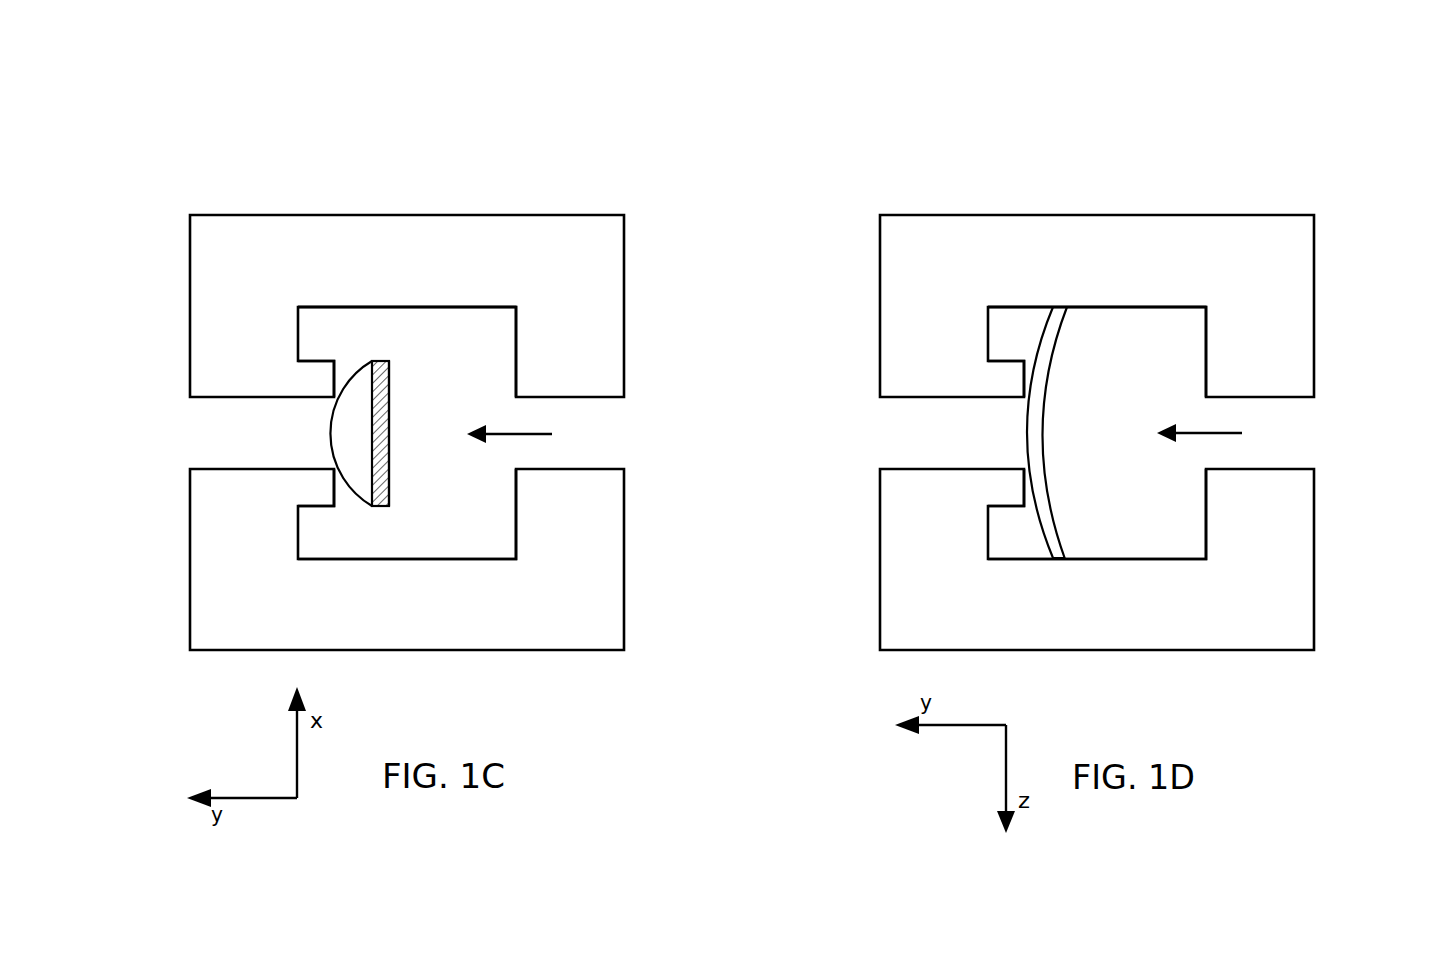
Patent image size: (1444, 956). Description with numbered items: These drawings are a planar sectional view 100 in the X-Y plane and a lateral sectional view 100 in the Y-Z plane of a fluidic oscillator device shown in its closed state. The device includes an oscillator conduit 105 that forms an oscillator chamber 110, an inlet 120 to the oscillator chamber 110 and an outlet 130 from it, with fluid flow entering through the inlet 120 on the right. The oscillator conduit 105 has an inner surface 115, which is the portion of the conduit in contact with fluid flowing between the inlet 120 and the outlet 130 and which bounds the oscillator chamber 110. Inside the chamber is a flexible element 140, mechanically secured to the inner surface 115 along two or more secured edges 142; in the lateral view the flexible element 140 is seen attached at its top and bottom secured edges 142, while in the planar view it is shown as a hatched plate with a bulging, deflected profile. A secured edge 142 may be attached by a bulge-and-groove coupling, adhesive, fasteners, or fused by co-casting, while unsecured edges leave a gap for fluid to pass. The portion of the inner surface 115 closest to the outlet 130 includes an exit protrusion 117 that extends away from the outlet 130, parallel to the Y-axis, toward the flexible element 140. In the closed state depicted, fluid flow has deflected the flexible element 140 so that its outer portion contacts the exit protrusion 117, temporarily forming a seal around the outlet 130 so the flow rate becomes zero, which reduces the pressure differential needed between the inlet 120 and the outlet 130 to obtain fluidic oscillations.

In FIG. 1C, the sectional view 100 is at (173, 64).
In FIG. 1D, the sectional view 100 is at (862, 62).
In FIG. 1C, the oscillator conduit 105 is at (553, 272).
In FIG. 1D, the oscillator conduit 105 is at (1228, 265).
In FIG. 1C, the oscillator chamber 110 is at (461, 342).
In FIG. 1D, the oscillator chamber 110 is at (1151, 342).
In FIG. 1C, the inner surface 115 is at (425, 306).
In FIG. 1D, the inner surface 115 is at (1115, 306).
In FIG. 1C, the exit protrusion 117 is at (318, 490).
In FIG. 1D, the exit protrusion 117 is at (1020, 487).
In FIG. 1C, the inlet 120 is at (623, 450).
In FIG. 1D, the inlet 120 is at (1312, 450).
In FIG. 1C, the outlet 130 is at (190, 442).
In FIG. 1D, the outlet 130 is at (880, 442).
In FIG. 1C, the flexible element 140 is at (340, 410).
In FIG. 1D, the flexible element 140 is at (1047, 333).
In FIG. 1C, the secured edge 142 is at (386, 462).
In FIG. 1D, the secured edge 142 is at (1064, 561).